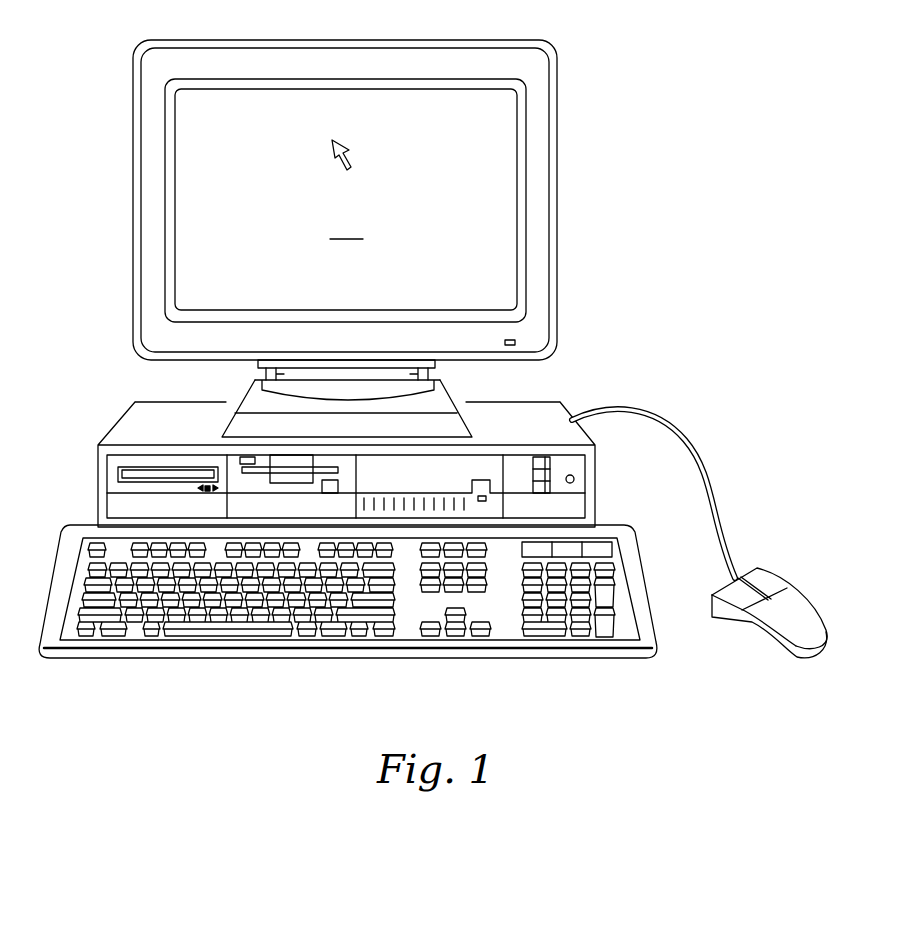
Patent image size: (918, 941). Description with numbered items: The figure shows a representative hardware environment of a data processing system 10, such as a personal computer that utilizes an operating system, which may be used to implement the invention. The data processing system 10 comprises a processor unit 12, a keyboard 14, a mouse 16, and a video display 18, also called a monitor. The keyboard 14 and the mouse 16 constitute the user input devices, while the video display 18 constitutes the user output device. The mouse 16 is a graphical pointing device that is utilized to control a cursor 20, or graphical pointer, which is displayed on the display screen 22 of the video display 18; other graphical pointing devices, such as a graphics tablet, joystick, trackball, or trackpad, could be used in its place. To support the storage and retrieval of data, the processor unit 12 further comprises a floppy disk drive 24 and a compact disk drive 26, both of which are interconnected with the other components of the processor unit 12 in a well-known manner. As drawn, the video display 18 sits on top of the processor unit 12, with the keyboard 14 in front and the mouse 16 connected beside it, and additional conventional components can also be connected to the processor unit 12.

The data processing system 10 is at (631, 97).
The processor unit 12 is at (110, 422).
The keyboard 14 is at (203, 660).
The mouse 16 is at (786, 582).
The video display 18 is at (557, 188).
The cursor 20 is at (341, 146).
The display screen 22 is at (346, 226).
The floppy disk drive 24 is at (340, 467).
The compact disk drive 26 is at (117, 477).